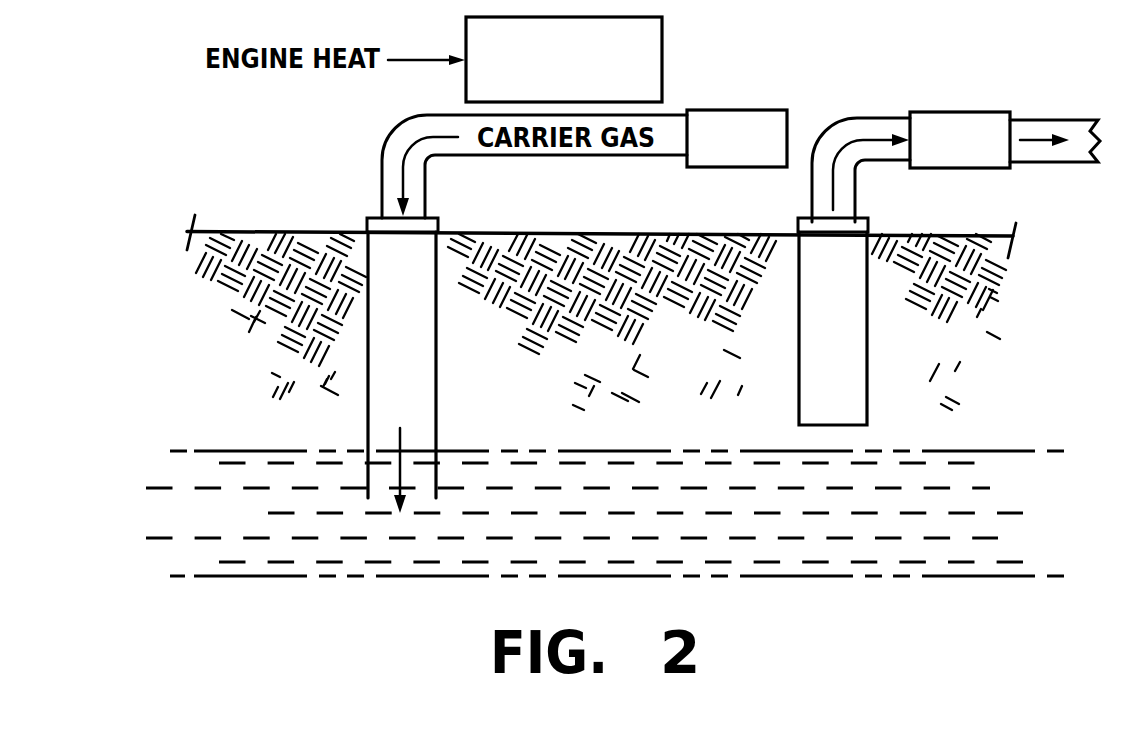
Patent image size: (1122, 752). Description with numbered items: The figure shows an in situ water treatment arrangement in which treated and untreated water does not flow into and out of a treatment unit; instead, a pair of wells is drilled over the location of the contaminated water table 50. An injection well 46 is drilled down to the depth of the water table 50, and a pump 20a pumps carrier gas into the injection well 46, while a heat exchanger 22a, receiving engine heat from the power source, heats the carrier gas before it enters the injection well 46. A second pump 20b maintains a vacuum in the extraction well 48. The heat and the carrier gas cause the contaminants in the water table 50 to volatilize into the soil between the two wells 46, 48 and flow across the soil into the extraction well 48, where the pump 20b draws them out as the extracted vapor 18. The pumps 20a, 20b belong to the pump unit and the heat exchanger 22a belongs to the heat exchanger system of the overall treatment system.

The heat exchanger 22a is at (662, 17).
The pump 20a is at (737, 110).
The pump 20b is at (962, 112).
The extracted vapor 18 is at (1073, 163).
The injection well 46 is at (437, 393).
The extraction well 48 is at (868, 411).
The contaminated water table 50 is at (1000, 473).